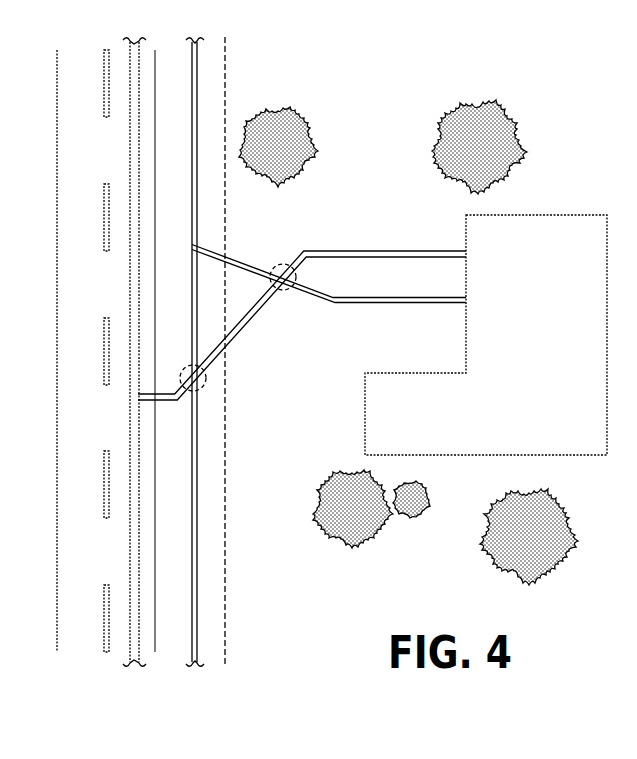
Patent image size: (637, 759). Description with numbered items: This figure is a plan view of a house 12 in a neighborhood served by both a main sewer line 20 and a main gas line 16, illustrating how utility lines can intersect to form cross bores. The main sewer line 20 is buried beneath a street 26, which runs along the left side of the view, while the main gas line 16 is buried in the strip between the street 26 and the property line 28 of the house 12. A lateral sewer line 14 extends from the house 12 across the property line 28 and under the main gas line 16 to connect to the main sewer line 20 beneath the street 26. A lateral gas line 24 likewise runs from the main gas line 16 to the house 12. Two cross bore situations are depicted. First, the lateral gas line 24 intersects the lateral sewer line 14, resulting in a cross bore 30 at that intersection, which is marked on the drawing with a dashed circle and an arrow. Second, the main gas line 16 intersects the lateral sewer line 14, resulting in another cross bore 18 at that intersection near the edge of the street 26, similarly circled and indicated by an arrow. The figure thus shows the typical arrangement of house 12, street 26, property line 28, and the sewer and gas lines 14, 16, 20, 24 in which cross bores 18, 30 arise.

The house 12 is at (549, 334).
The lateral sewer line 14 is at (248, 327).
The main gas line 16 is at (197, 85).
The cross bore 18 is at (208, 376).
The main sewer line 20 is at (130, 160).
The lateral gas line 24 is at (375, 303).
The street 26 is at (158, 668).
The property line 28 is at (226, 568).
The cross bore 30 is at (283, 295).